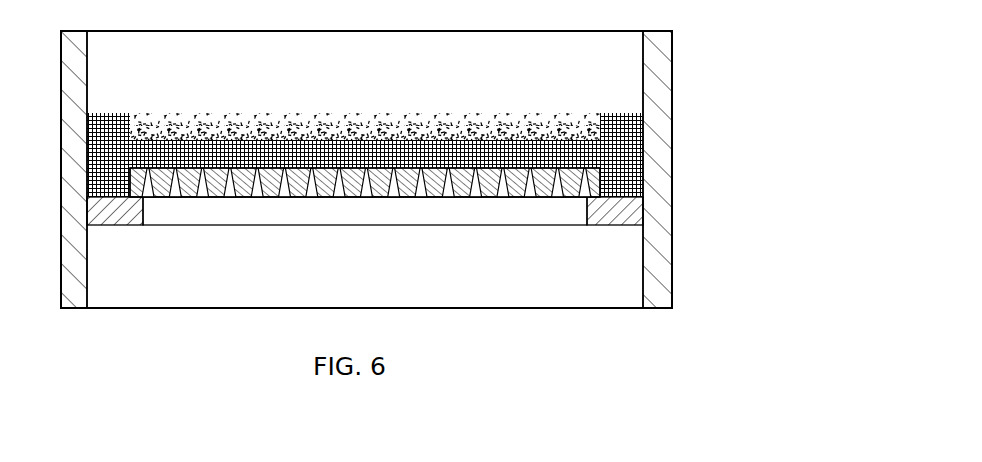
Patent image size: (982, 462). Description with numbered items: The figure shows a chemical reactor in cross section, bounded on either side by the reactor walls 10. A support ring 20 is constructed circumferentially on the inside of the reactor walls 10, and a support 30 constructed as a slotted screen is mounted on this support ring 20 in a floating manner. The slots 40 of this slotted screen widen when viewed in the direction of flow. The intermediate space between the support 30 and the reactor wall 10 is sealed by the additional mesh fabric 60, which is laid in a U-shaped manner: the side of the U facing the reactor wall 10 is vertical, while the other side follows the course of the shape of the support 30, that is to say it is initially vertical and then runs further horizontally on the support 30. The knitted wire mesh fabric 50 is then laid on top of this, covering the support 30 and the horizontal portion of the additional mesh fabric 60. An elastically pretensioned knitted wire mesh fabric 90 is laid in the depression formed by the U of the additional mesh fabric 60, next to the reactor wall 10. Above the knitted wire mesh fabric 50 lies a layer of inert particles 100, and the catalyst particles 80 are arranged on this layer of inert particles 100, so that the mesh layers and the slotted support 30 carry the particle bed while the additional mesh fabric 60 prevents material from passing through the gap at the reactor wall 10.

The reactor wall 10 is at (663, 73).
The support ring 20 is at (628, 212).
The support 30 is at (378, 183).
The slots 40 is at (417, 194).
The knitted wire mesh fabric 50 is at (284, 163).
The additional mesh fabric 60 is at (106, 168).
The catalyst particles 80 is at (453, 116).
The elastically pretensioned knitted wire mesh fabric 90 is at (104, 160).
The inert particles 100 is at (518, 117).